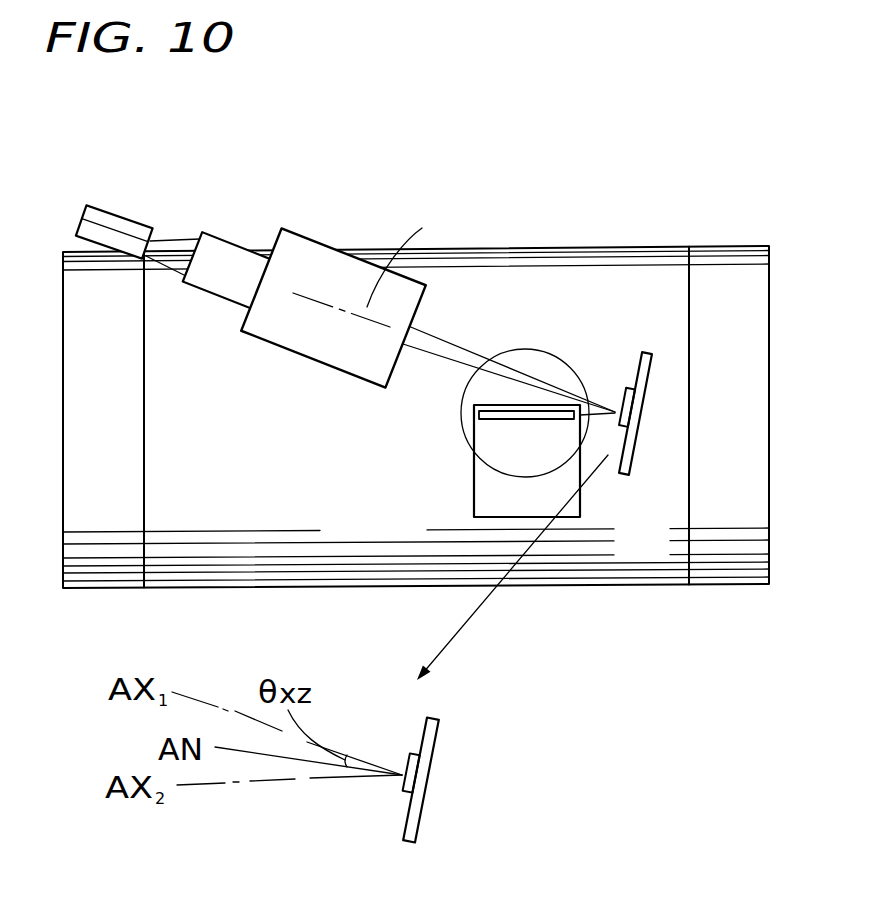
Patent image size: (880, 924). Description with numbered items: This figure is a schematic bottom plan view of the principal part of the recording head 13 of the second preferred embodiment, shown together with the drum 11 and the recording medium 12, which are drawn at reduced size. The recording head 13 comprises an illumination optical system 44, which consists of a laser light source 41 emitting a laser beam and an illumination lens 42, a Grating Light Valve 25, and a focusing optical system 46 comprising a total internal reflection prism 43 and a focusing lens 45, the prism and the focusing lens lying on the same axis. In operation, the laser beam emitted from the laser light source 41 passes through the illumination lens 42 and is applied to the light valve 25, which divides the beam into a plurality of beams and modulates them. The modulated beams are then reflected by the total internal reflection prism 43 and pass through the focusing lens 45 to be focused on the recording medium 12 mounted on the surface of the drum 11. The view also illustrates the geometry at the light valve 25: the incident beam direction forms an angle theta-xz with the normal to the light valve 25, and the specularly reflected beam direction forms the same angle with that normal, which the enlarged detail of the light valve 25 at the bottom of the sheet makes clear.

The drum 11 is at (753, 250).
The recording medium 12 is at (661, 256).
The recording head 13 is at (345, 250).
The GLV (Grating Light Valve) 25 is at (633, 447).
The laser light source 41 is at (120, 216).
The illumination lens 42 is at (220, 150).
The total internal reflection prism 43 is at (485, 487).
The illumination optical system 44 is at (251, 238).
The focusing lens 45 is at (465, 396).
The focusing optical system 46 is at (443, 446).